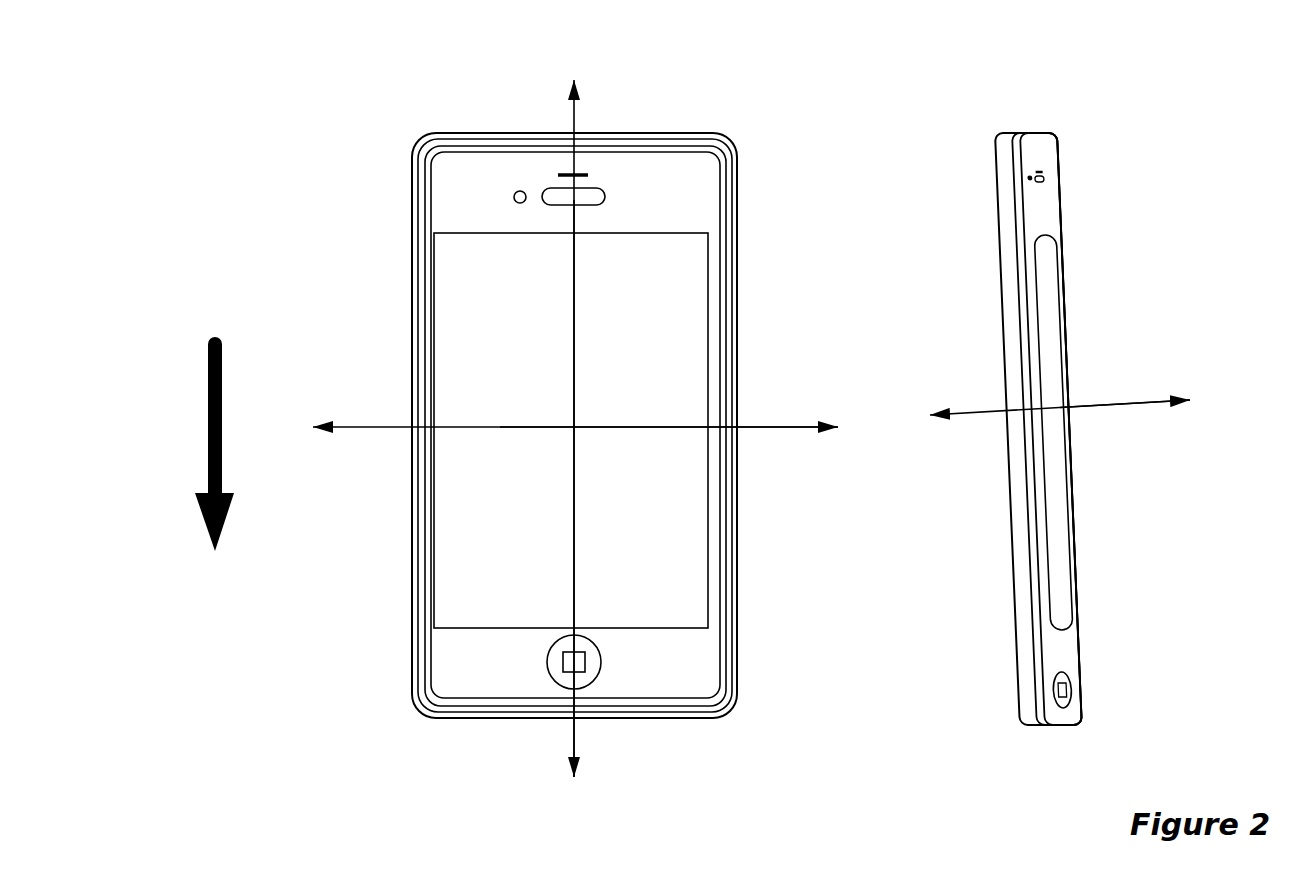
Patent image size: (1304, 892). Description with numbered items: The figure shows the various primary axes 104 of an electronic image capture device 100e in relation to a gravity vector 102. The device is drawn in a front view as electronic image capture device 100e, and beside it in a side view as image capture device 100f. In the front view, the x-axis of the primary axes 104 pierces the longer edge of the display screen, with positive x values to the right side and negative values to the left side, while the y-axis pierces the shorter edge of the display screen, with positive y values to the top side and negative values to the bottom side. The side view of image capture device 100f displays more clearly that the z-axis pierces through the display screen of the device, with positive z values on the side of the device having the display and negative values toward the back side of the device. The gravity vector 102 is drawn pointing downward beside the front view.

The electronic image capture device 100e is at (424, 102).
The image capture device (side view) 100f is at (984, 114).
The gravity vector 102 is at (220, 310).
The primary axes 104 is at (588, 118).